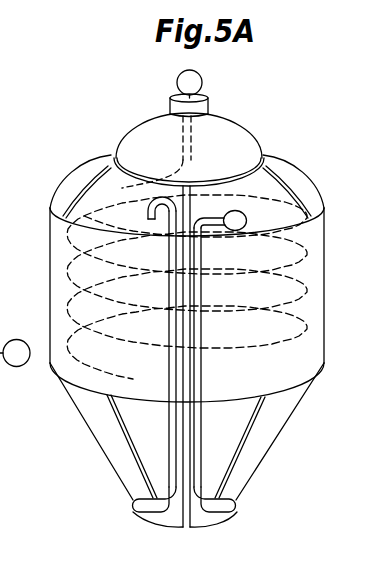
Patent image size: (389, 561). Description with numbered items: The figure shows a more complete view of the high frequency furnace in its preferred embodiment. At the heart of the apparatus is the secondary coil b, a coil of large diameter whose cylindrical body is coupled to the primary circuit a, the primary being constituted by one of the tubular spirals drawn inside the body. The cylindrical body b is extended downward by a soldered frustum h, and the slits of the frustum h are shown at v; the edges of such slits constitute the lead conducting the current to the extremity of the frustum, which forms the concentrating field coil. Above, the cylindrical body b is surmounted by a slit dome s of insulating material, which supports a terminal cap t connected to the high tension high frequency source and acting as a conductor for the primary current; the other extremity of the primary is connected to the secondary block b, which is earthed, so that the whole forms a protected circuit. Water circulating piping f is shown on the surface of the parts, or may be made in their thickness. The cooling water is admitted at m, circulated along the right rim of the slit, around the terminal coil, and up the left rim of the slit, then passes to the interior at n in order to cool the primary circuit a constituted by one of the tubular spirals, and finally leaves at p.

The primary circuit a is at (54, 313).
The slit dome s is at (300, 182).
The terminal cap t is at (233, 135).
The water outlet p is at (202, 80).
The secondary coil b is at (310, 267).
The water circulating piping f is at (197, 428).
The water passage to interior n is at (144, 354).
The water inlet m is at (235, 357).
The frustum h is at (108, 440).
The slits of the frustum v is at (240, 447).